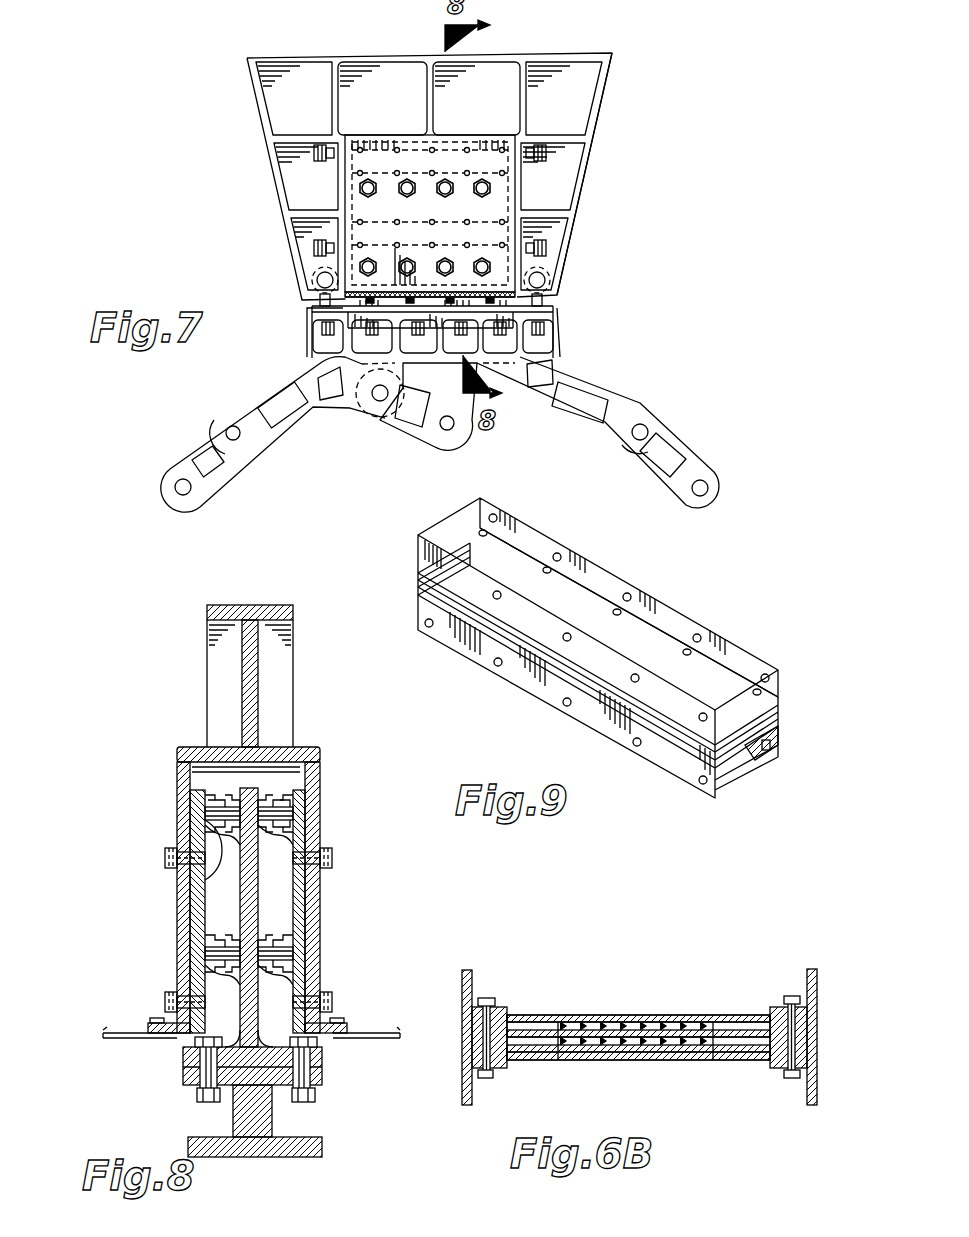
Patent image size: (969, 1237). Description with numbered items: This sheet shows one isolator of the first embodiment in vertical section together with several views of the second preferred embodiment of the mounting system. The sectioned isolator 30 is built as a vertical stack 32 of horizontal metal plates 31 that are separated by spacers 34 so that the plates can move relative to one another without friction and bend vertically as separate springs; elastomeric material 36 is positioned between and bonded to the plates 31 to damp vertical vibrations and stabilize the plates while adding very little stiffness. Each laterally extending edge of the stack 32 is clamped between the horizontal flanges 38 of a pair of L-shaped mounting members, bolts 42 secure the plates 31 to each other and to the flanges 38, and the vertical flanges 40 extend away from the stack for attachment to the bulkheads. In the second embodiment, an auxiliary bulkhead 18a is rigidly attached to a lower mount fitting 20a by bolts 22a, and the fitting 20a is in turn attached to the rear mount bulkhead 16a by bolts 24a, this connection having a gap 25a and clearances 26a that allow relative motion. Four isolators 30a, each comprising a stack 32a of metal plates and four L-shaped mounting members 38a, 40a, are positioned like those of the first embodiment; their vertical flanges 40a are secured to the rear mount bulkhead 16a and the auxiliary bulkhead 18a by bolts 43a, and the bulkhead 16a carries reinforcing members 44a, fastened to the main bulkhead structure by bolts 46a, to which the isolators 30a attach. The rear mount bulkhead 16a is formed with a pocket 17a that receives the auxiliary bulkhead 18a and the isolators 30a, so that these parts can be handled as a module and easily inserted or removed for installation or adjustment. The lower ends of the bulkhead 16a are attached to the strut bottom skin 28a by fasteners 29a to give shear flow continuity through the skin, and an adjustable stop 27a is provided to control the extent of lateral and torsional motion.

In FIG. 7, the rear mount bulkhead 16a is at (578, 198).
In FIG. 8, the rear mount bulkhead 16a is at (318, 745).
In FIG. 8, the pocket 17a is at (200, 772).
In FIG. 7, the auxiliary bulkhead 18a is at (500, 312).
In FIG. 8, the auxiliary bulkhead 18a is at (258, 898).
In FIG. 7, the lower mount fitting 20a is at (642, 412).
In FIG. 8, the lower mount fitting 20a is at (270, 1122).
In FIG. 7, the bolts 22a is at (300, 365).
In FIG. 8, the bolts 22a is at (300, 1057).
In FIG. 7, the bolts 24a is at (315, 302).
In FIG. 7, the gap 25a is at (548, 302).
In FIG. 7, the clearances 26a is at (548, 344).
In FIG. 7, the adjustable stop 27a is at (330, 153).
In FIG. 8, the strut bottom skin 28a is at (122, 1038).
In FIG. 8, the fasteners 29a is at (355, 1018).
In FIG. 9, the isolators 30a is at (726, 612).
In FIG. 8, the isolators 30a is at (283, 795).
In FIG. 9, the stack of metal plates 32a is at (780, 712).
In FIG. 8, the stack of metal plates 32a is at (305, 808).
In FIG. 8, the mounting members 38a is at (195, 992).
In FIG. 9, the vertical flanges 40a is at (470, 522).
In FIG. 8, the vertical flanges 40a is at (290, 916).
In FIG. 7, the bolts 43a is at (470, 228).
In FIG. 8, the bolts 43a is at (205, 885).
In FIG. 8, the reinforcing members 44a is at (200, 820).
In FIG. 7, the bolts 46a is at (480, 178).
In FIG. 8, the bolts 46a is at (165, 858).
In FIG. 6B, the isolator 30 is at (483, 968).
In FIG. 6B, the metal plates 31 is at (740, 1016).
In FIG. 6B, the stack 32 is at (548, 1010).
In FIG. 6B, the spacers 34 is at (465, 1024).
In FIG. 6B, the elastomeric material 36 is at (582, 1060).
In FIG. 6B, the horizontal flange 38 is at (772, 1005).
In FIG. 6B, the vertical flange 40 is at (810, 1095).
In FIG. 6B, the bolts 42 is at (490, 1078).